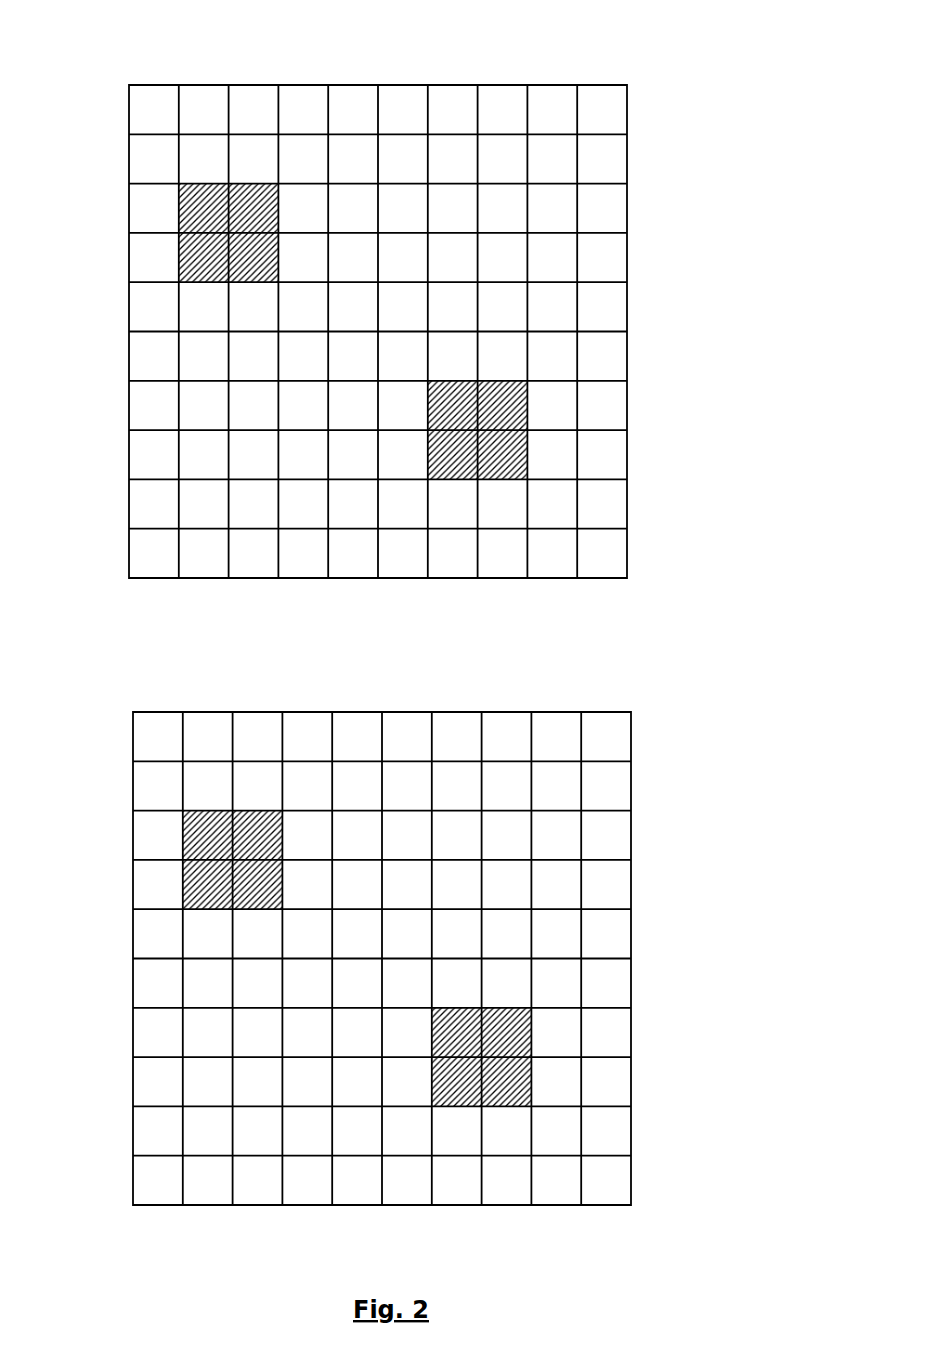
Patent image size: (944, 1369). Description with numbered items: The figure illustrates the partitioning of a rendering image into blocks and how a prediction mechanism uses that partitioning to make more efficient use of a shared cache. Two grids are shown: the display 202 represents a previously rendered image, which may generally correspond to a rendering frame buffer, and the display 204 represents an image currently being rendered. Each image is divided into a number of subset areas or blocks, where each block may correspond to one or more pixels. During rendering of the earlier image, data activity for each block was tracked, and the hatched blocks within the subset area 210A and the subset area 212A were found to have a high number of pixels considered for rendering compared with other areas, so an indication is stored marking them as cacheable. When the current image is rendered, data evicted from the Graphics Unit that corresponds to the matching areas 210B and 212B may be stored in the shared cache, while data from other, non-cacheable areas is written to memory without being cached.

The display 202 is at (398, 302).
The display 204 is at (405, 939).
The subset area 210A is at (180, 248).
The subset area 212A is at (527, 432).
The subset area 210B is at (183, 872).
The subset area 212B is at (531, 1058).